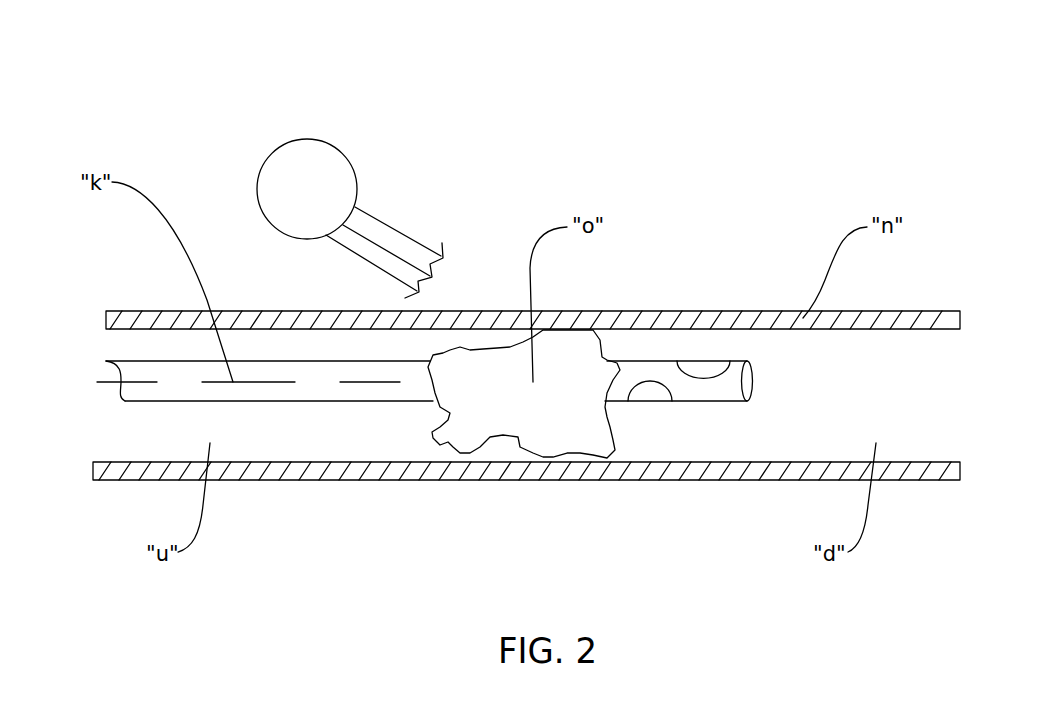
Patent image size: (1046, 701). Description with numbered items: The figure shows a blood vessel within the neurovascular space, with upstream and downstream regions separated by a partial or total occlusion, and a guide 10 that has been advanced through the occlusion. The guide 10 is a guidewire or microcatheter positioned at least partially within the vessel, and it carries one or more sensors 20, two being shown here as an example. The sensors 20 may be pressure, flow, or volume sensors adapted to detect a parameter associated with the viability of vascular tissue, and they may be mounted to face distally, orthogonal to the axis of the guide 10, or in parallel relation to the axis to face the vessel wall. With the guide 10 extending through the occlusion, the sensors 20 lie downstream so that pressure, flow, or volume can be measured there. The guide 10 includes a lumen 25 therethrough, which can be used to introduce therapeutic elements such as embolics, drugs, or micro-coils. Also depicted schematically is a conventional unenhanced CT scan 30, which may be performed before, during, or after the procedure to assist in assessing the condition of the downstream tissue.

The guide 10 is at (167, 382).
The sensor 20 is at (702, 372).
The lumen 25 is at (752, 363).
The CT scan 30 is at (355, 171).